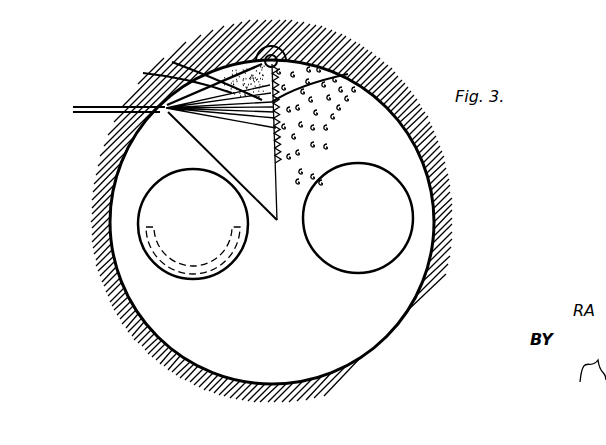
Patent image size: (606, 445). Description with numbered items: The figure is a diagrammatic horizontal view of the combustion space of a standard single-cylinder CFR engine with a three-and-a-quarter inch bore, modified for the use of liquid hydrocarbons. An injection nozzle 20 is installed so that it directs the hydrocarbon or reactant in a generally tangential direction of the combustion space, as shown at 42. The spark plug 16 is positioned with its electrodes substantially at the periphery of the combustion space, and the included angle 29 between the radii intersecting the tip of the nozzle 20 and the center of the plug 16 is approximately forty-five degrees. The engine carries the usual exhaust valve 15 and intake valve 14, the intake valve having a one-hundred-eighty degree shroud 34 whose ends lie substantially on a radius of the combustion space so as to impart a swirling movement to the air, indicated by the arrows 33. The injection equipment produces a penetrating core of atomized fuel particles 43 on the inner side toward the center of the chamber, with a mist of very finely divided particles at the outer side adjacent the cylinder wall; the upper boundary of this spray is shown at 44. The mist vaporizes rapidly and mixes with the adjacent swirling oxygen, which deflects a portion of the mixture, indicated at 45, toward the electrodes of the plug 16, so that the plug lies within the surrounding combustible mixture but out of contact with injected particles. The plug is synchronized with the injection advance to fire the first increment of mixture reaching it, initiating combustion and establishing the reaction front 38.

The intake valve 14 is at (152, 208).
The exhaust valve 15 is at (405, 200).
The spark plug 16 is at (262, 50).
The injection nozzle 20 is at (87, 106).
The included angle 29 is at (275, 162).
The arrows 33 is at (193, 146).
The shroud 34 is at (147, 251).
The reaction front 38 is at (348, 74).
The tangential injection direction 42 is at (160, 115).
The penetrating core of atomized fuel particles 43 is at (204, 71).
The spray boundary 44 is at (174, 79).
The deflected portion of mixture 45 is at (257, 72).